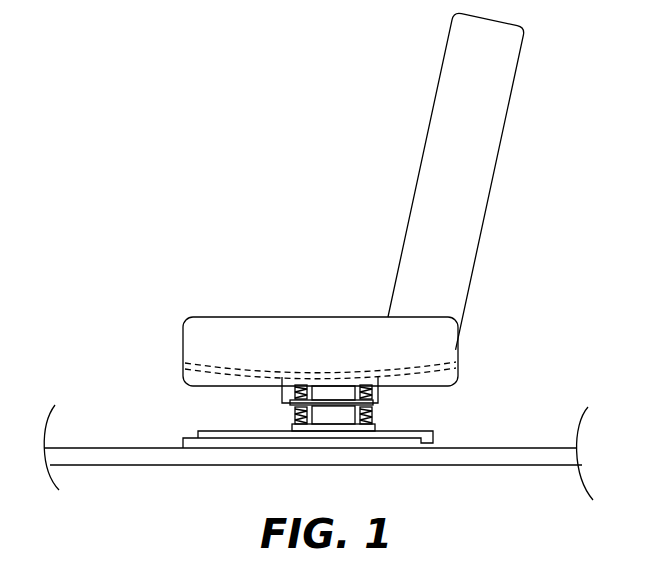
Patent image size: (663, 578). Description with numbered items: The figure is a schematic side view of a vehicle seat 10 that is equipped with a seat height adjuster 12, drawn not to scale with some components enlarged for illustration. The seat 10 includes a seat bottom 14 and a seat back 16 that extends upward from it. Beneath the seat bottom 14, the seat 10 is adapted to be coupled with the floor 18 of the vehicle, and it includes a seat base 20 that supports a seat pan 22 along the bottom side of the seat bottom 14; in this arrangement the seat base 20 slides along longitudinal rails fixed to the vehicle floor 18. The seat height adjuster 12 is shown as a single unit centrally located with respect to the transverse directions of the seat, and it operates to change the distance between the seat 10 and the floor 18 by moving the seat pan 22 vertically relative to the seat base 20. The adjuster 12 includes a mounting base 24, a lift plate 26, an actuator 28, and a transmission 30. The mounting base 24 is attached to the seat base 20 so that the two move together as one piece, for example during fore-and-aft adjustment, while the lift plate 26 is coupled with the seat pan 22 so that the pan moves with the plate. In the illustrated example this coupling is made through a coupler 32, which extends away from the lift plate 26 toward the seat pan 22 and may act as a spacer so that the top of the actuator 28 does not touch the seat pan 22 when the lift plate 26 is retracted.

The vehicle seat 10 is at (332, 158).
The seat height adjuster 12 is at (318, 387).
The seat bottom 14 is at (183, 357).
The seat back 16 is at (500, 163).
The floor 18 is at (120, 448).
The seat base 20 is at (433, 435).
The seat pan 22 is at (458, 365).
The mounting base 24 is at (300, 430).
The lift plate 26 is at (283, 397).
The actuator 28 is at (343, 387).
The transmission 30 is at (375, 412).
The coupler 32 is at (383, 403).